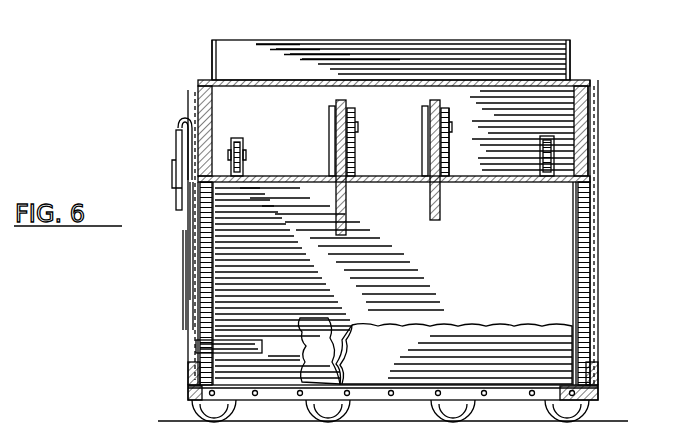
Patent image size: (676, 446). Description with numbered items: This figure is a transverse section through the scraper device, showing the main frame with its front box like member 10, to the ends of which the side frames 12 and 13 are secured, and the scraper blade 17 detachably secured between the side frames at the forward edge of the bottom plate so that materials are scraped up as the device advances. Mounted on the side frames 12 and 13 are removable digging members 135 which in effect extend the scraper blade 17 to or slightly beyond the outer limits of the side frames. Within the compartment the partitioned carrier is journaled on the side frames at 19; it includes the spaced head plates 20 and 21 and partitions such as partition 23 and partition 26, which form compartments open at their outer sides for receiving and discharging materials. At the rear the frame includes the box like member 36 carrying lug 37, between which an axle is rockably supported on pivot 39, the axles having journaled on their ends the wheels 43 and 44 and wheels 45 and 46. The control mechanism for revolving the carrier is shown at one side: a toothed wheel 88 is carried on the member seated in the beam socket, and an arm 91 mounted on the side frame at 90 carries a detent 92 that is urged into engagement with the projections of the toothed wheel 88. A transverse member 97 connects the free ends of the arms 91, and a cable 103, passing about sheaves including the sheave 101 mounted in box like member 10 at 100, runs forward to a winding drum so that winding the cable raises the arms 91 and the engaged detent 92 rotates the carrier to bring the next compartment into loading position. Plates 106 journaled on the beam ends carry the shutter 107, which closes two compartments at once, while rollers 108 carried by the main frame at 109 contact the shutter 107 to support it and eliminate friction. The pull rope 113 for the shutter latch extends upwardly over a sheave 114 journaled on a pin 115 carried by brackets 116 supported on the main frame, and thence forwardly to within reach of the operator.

The front box like member 10 is at (338, 82).
The side frame 12 is at (202, 216).
The side frame 13 is at (582, 226).
The scraper blade 17 is at (405, 392).
The carrier journal 19 is at (583, 120).
The head plate 20 is at (212, 72).
The head plate 21 is at (570, 68).
The partition 23 is at (454, 354).
The partition 26 is at (352, 50).
The box like member 36 is at (180, 136).
The lug 37 is at (204, 118).
The pivot 39 is at (190, 372).
The wheel 43 is at (240, 406).
The wheel 44 is at (354, 406).
The wheel 45 is at (478, 406).
The wheel 46 is at (592, 406).
The toothed wheel 88 is at (192, 198).
The arm mounting 90 is at (178, 176).
The arm 91 is at (186, 250).
The detent 92 is at (194, 230).
The member 97 is at (262, 344).
The sheave mounting 100 is at (355, 134).
The sheave 101 is at (352, 122).
The cable 103 is at (340, 114).
The plate 106 is at (218, 300).
The shutter 107 is at (573, 208).
The roller 108 is at (238, 160).
The roller mounting 109 is at (242, 158).
The pull rope 113 is at (436, 110).
The sheave 114 is at (444, 120).
The pin 115 is at (446, 132).
The bracket 116 is at (448, 146).
The digging member 135 is at (186, 390).